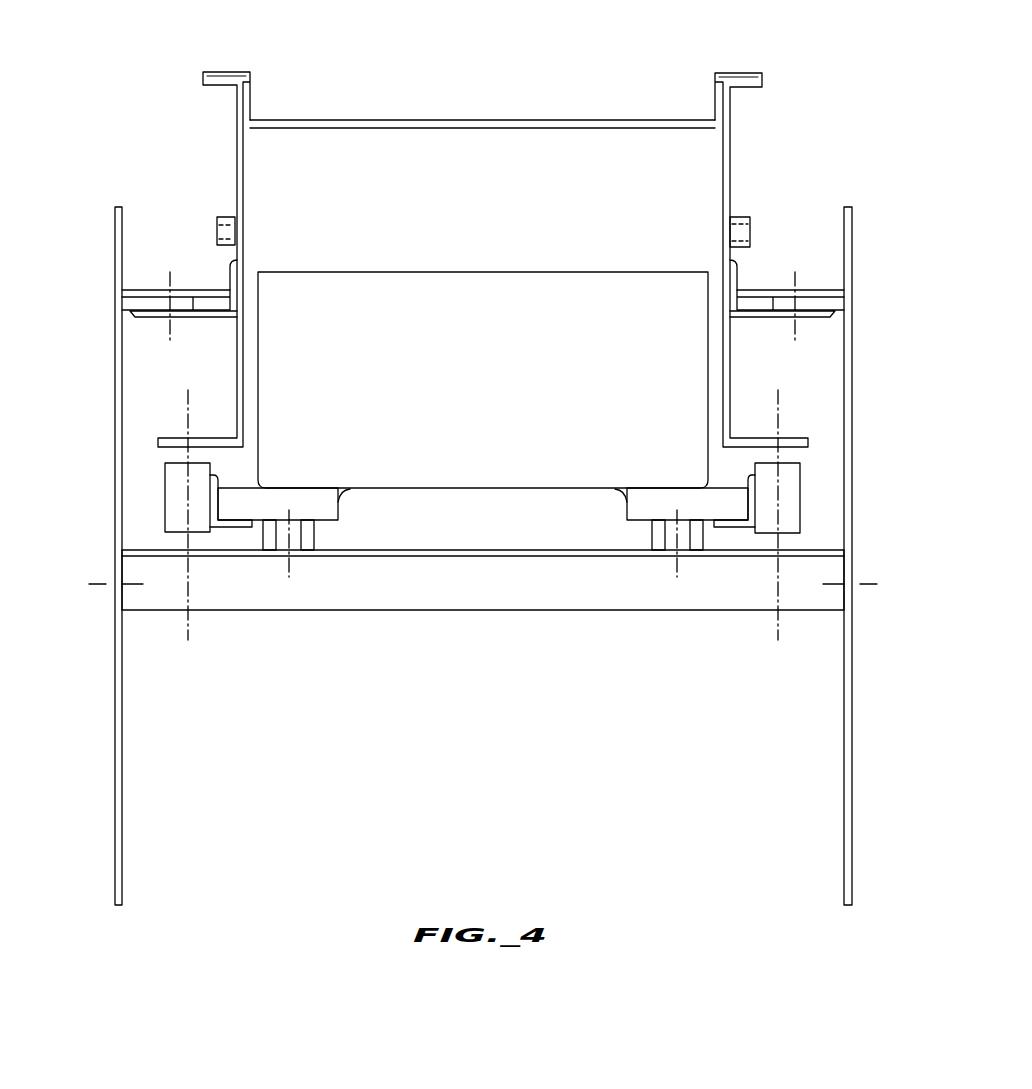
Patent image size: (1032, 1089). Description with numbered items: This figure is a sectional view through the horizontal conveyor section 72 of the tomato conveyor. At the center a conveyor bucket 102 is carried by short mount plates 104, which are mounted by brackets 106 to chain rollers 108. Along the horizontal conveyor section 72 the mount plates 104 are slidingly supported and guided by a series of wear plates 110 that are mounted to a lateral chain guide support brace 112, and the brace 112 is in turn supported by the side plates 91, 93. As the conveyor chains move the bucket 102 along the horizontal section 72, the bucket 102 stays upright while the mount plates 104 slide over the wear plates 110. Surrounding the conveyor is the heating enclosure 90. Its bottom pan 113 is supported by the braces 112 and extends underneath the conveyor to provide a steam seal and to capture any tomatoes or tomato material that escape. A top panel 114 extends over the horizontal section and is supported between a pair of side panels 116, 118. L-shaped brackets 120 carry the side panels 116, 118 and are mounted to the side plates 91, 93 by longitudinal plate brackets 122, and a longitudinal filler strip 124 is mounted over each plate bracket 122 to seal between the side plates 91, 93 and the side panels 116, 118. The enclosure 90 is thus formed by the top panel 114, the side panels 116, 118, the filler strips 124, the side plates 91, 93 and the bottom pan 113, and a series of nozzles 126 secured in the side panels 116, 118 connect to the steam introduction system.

The horizontal conveyor section 72 is at (608, 664).
The heating enclosure 90 is at (626, 54).
The side plate 91 is at (113, 765).
The side plate 93 is at (853, 766).
The conveyor bucket 102 is at (483, 387).
The mount plate 104 is at (340, 505).
The bracket 106 is at (226, 528).
The chain roller 108 is at (158, 500).
The wear plate 110 is at (327, 552).
The lateral chain guide support brace 112 is at (338, 618).
The bottom pan 113 is at (786, 542).
The top panel 114 is at (414, 110).
The side panel 116 is at (730, 175).
The side panel 118 is at (230, 130).
The L-shaped bracket 120 is at (142, 318).
The longitudinal plate bracket 122 is at (132, 303).
The longitudinal filler strip 124 is at (155, 280).
The nozzle 126 is at (216, 232).